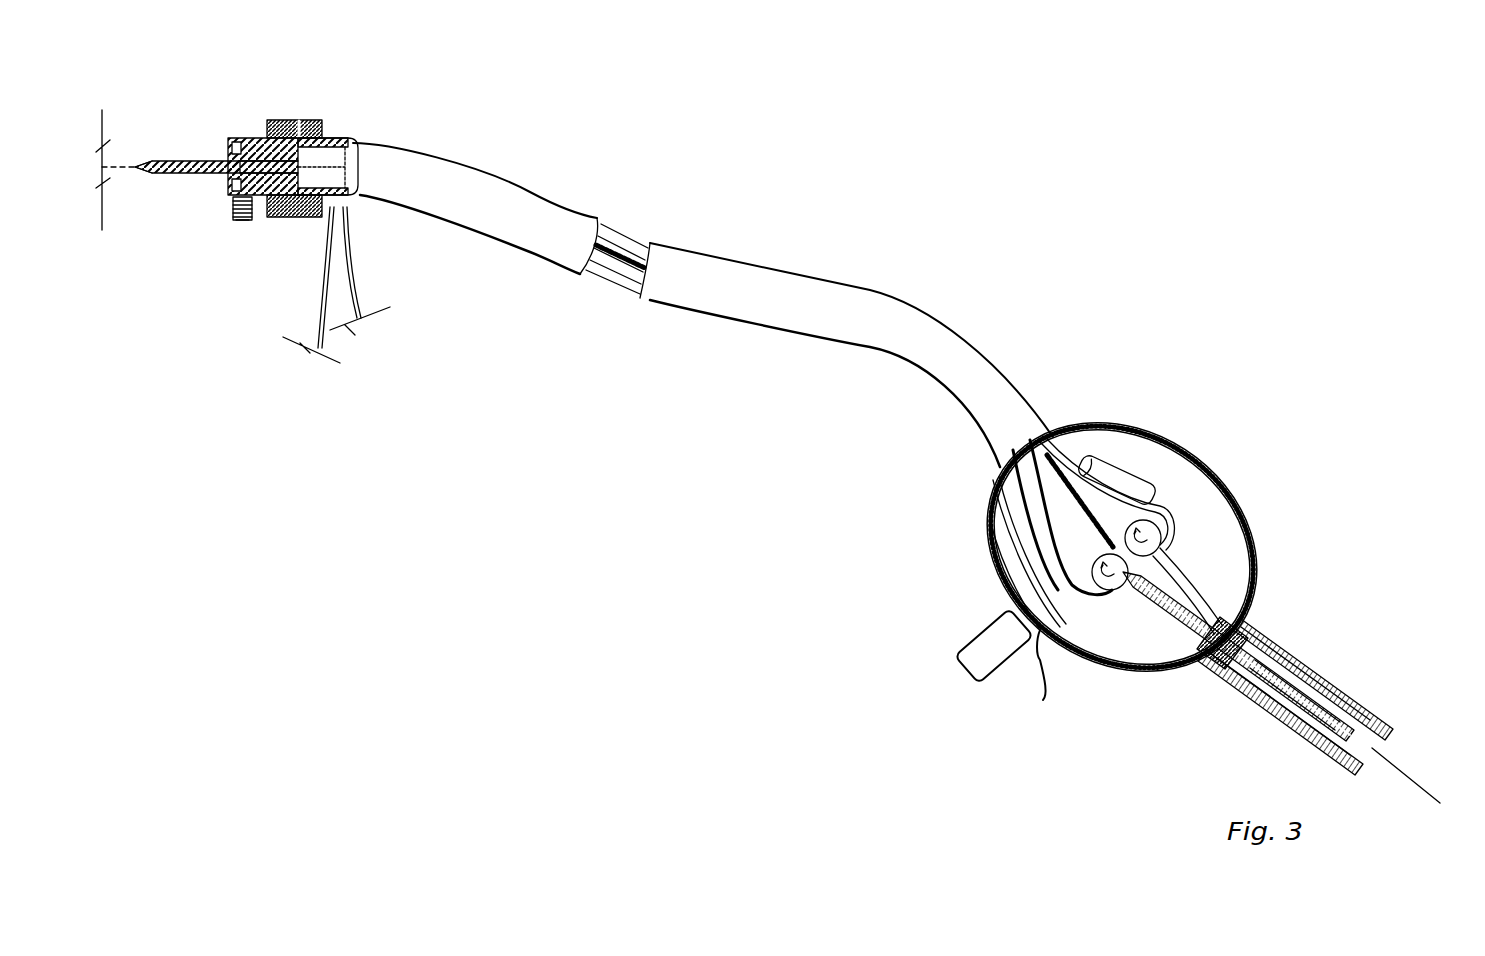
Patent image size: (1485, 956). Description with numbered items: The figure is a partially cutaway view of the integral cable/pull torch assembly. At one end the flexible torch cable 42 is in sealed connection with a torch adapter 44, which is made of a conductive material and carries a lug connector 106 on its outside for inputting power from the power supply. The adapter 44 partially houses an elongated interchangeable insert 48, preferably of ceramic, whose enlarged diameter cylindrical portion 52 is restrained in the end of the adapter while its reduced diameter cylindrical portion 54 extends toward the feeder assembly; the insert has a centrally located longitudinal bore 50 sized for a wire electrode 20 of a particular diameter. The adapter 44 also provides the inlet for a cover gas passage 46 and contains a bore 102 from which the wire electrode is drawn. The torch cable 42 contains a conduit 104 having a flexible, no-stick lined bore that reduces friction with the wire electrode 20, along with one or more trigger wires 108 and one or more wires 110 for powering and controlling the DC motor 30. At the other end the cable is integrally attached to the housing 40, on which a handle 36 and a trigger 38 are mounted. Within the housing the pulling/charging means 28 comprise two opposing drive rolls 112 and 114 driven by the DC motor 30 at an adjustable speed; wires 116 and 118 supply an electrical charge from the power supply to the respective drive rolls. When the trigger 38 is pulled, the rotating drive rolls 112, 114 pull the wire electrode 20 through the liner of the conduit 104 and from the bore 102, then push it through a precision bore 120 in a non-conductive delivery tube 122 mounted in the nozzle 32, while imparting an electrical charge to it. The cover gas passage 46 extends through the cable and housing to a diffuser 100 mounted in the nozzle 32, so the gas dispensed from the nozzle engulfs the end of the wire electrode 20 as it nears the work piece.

The wire electrode 20 is at (1440, 803).
The pulling/charging means 28 is at (1220, 543).
The DC motor 30 is at (1125, 462).
The nozzle 32 is at (1370, 713).
The handle 36 is at (958, 670).
The trigger 38 is at (1040, 640).
The housing 40 is at (988, 522).
The torch cable 42 is at (780, 335).
The torch adapter 44 is at (253, 140).
The passage 46 is at (243, 140).
The interchangeable insert 48 is at (194, 160).
The longitudinal bore 50 is at (170, 158).
The enlarged diameter cylindrical portion 52 is at (247, 190).
The reduced diameter cylindrical portion 54 is at (188, 177).
The diffuser 100 is at (1268, 650).
The bore 102 is at (330, 140).
The conduit 104 is at (347, 158).
The lug connector 106 is at (250, 217).
The trigger wires 108 is at (330, 285).
The wires 110 is at (347, 307).
The drive roll 112 is at (1098, 550).
The drive roll 114 is at (1165, 535).
The wire 116 is at (1010, 620).
The wire 118 is at (1170, 512).
The precision bore 120 is at (1312, 718).
The delivery tube 122 is at (1318, 688).